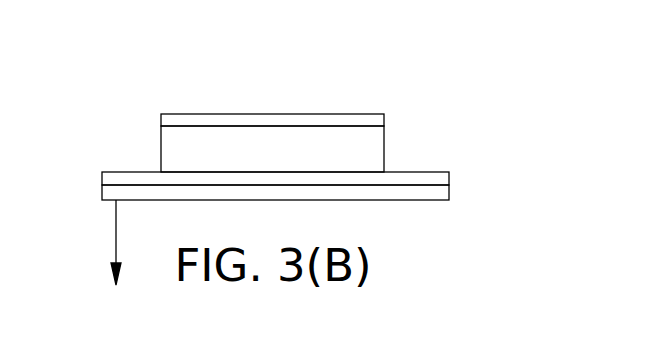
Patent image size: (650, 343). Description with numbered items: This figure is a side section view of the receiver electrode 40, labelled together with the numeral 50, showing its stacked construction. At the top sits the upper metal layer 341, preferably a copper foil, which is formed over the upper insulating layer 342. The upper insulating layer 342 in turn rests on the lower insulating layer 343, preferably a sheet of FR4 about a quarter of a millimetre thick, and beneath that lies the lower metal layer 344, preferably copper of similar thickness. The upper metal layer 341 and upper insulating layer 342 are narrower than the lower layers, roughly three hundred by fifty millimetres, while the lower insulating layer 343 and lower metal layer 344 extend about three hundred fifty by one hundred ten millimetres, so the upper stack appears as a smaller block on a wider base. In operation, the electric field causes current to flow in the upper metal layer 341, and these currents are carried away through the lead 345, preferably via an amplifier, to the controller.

The receiver electrode 40 is at (315, 133).
The vibrating element 50 is at (315, 133).
The upper metal layer 341 is at (384, 120).
The upper insulating layer 342 is at (384, 150).
The lower insulating layer 343 is at (449, 180).
The lower metal layer 344 is at (449, 189).
The lead 345 is at (306, 109).